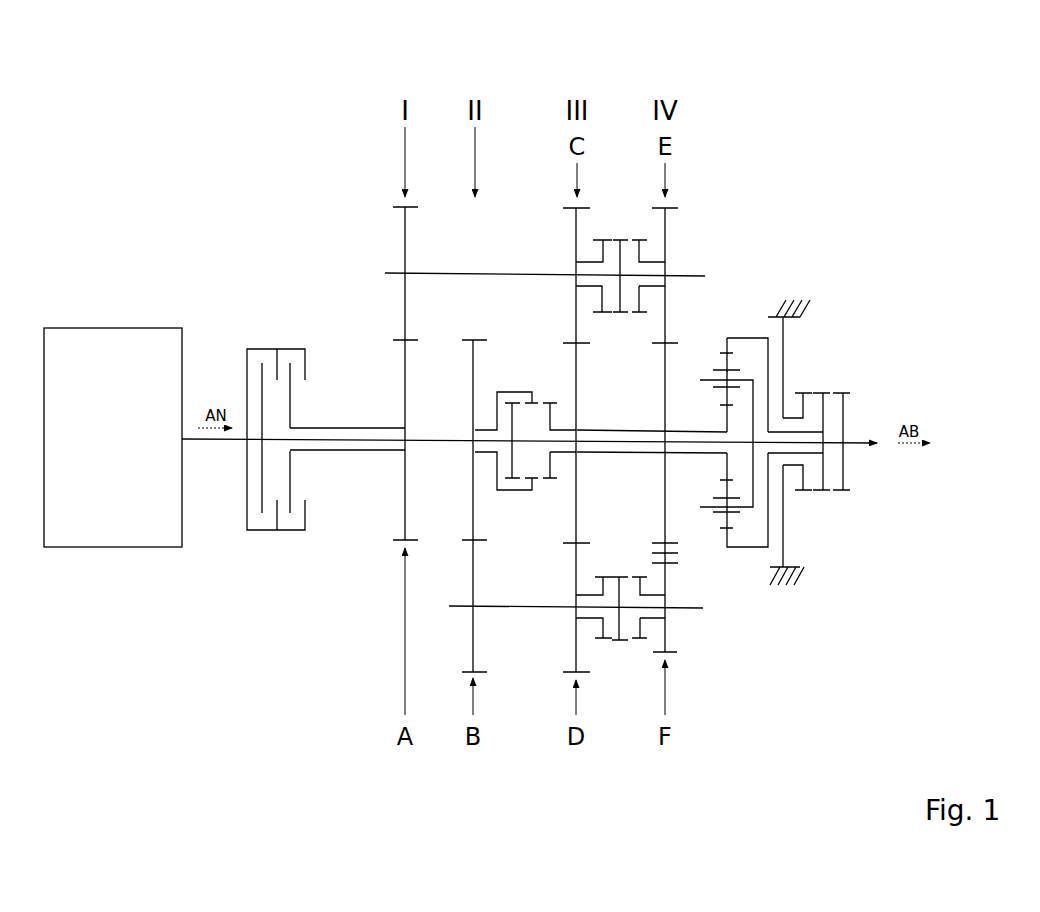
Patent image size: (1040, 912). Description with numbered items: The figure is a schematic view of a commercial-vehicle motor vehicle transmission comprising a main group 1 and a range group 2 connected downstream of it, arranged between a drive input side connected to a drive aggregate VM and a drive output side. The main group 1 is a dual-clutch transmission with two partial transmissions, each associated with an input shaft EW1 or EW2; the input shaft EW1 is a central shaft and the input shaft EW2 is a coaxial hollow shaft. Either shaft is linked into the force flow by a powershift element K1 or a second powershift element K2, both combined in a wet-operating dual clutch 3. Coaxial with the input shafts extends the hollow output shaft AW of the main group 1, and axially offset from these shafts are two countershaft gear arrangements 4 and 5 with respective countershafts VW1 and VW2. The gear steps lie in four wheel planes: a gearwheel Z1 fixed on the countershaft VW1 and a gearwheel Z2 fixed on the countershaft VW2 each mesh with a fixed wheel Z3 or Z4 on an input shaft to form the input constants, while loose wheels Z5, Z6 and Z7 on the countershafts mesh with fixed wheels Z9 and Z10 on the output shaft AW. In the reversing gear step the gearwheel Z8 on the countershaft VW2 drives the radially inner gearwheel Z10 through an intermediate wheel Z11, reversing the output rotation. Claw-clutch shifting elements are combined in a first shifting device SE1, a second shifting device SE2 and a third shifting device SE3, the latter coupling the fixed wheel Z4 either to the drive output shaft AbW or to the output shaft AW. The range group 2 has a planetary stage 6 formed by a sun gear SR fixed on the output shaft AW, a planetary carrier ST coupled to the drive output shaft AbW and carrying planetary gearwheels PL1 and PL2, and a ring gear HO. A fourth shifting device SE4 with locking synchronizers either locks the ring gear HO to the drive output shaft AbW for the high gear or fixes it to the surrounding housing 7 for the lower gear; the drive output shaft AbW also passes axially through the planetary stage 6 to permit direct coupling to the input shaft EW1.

The drive aggregate VM is at (153, 327).
The powershift element K1 is at (255, 336).
The second powershift element K2 is at (287, 336).
The dual clutch 3 is at (268, 560).
The input shaft EW1 is at (374, 448).
The input shaft EW2 is at (333, 425).
The gearwheel Z1 is at (407, 238).
The gearwheel Z2 is at (471, 633).
The fixed wheel Z3 is at (403, 388).
The fixed wheel Z4 is at (468, 485).
The gearwheel Z5 is at (578, 233).
The gearwheel Z6 is at (667, 230).
The gearwheel Z7 is at (575, 637).
The gearwheel Z8 is at (667, 630).
The fixed wheel Z9 is at (575, 370).
The fixed wheel Z10 is at (668, 557).
The intermediate wheel Z11 is at (668, 512).
The first shifting device SE1 is at (620, 236).
The second shifting device SE2 is at (620, 648).
The third shifting device SE3 is at (530, 350).
The fourth shifting device SE4 is at (828, 358).
The countershaft VW1 is at (690, 274).
The countershaft VW2 is at (704, 618).
The output shaft AW is at (570, 455).
The drive output shaft AbW is at (853, 444).
The ring gear HO is at (729, 360).
The sun gear SR is at (730, 417).
The planetary gearwheel PL1 is at (770, 340).
The planetary gearwheel PL2 is at (730, 528).
The planetary carrier ST is at (770, 520).
The planetary stage 6 is at (727, 332).
The housing 7 is at (800, 307).
The main group 1 is at (587, 753).
The range group 2 is at (822, 193).
The countershaft gear arrangement 4 is at (712, 140).
The countershaft gear arrangement 5 is at (710, 700).